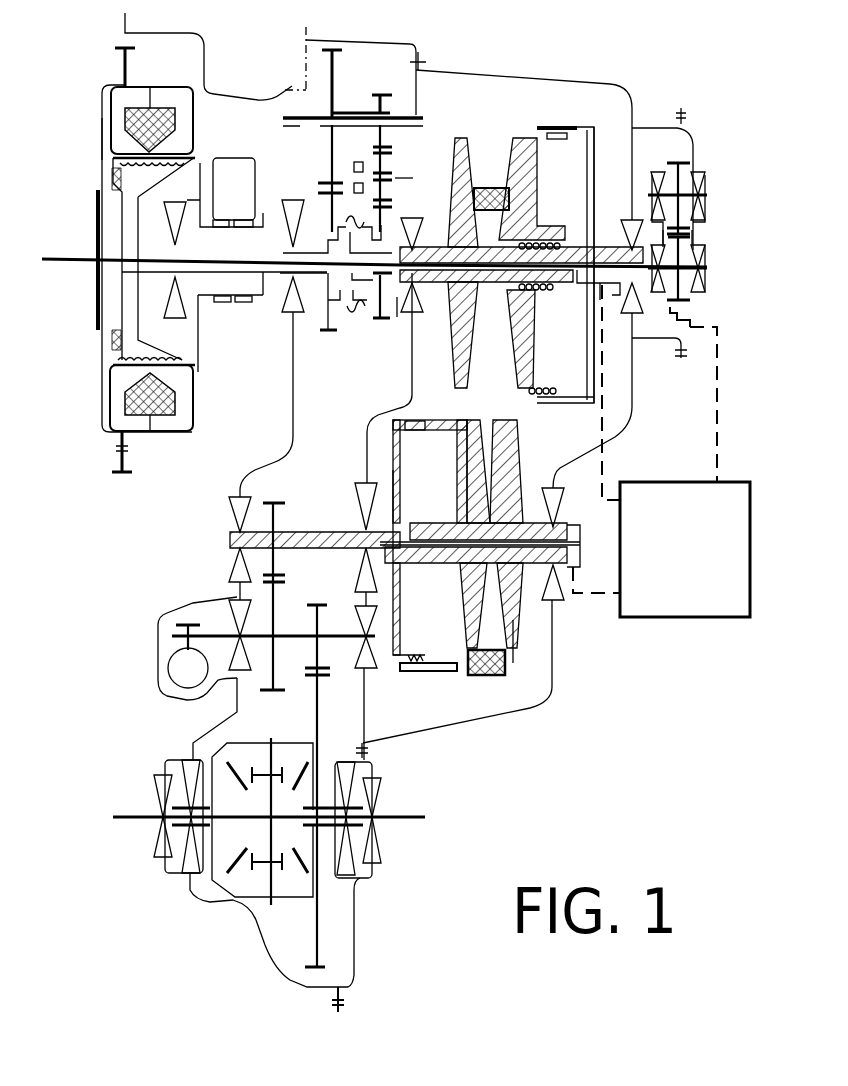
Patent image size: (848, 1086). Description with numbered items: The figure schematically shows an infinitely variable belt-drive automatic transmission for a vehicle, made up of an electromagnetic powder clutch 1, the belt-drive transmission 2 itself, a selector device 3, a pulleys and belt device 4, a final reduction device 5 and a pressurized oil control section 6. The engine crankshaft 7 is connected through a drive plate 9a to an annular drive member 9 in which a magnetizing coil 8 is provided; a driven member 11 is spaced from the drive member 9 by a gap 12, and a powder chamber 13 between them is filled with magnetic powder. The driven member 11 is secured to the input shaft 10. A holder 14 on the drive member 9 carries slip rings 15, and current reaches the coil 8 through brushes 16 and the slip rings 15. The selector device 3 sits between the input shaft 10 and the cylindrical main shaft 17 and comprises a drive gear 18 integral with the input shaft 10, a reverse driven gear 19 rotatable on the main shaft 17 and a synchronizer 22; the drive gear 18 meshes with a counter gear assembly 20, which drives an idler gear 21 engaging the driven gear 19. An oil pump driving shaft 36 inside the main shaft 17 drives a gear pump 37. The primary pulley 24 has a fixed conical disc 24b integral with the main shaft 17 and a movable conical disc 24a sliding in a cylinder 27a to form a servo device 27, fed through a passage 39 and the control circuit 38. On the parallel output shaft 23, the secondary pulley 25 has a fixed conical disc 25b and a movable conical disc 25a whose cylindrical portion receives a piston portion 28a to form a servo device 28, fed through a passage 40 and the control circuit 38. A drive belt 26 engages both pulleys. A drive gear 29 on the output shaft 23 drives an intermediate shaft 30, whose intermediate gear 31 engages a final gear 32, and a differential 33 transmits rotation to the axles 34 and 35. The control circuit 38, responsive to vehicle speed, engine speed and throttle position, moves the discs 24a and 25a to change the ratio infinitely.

The electromagnetic powder clutch 1 is at (185, 255).
The infinitely variable belt-drive transmission 2 is at (622, 84).
The selector device 3 is at (358, 60).
The pulleys and belt device 4 is at (504, 108).
The final reduction device 5 is at (324, 748).
The pressurized oil control section 6 is at (672, 460).
The crankshaft 7 is at (58, 265).
The magnetizing coil 8 is at (176, 128).
The drive member 9 is at (151, 90).
The drive plate 9a is at (100, 120).
The input shaft 10 is at (268, 274).
The driven member 11 is at (152, 170).
The gap 12 is at (198, 162).
The powder chamber 13 is at (112, 170).
The holder 14 is at (220, 157).
The slip rings 15 is at (247, 228).
The brushes 16 is at (242, 220).
The main shaft 17 is at (397, 297).
The drive gear 18 is at (333, 331).
The reverse driven gear 19 is at (380, 327).
The counter gear assembly 20 is at (383, 97).
The idler gear 21 is at (377, 163).
The synchronizer 22 is at (354, 310).
The output shaft 23 is at (352, 515).
The primary pulley 24 is at (484, 168).
The movable conical disc 24a is at (537, 125).
The fixed conical disc 24b is at (462, 138).
The secondary pulley 25 is at (453, 676).
The movable conical disc 25a is at (425, 664).
The fixed conical disc 25b is at (510, 664).
The drive belt 26 is at (480, 400).
The servo device 27 is at (570, 357).
The cylinder 27a is at (588, 126).
The servo device 28 is at (443, 486).
The piston portion 28a is at (390, 470).
The drive gear 29 is at (275, 505).
The intermediate shaft 30 is at (296, 636).
The intermediate gear 31 is at (314, 595).
The final gear 32 is at (307, 963).
The differential 33 is at (233, 902).
The axle 34 is at (157, 815).
The axle 35 is at (395, 822).
The oil pump driving shaft 36 is at (703, 280).
The gear pump 37 is at (694, 163).
The control circuit 38 is at (693, 480).
The passage 39 is at (603, 460).
The passage 40 is at (592, 596).